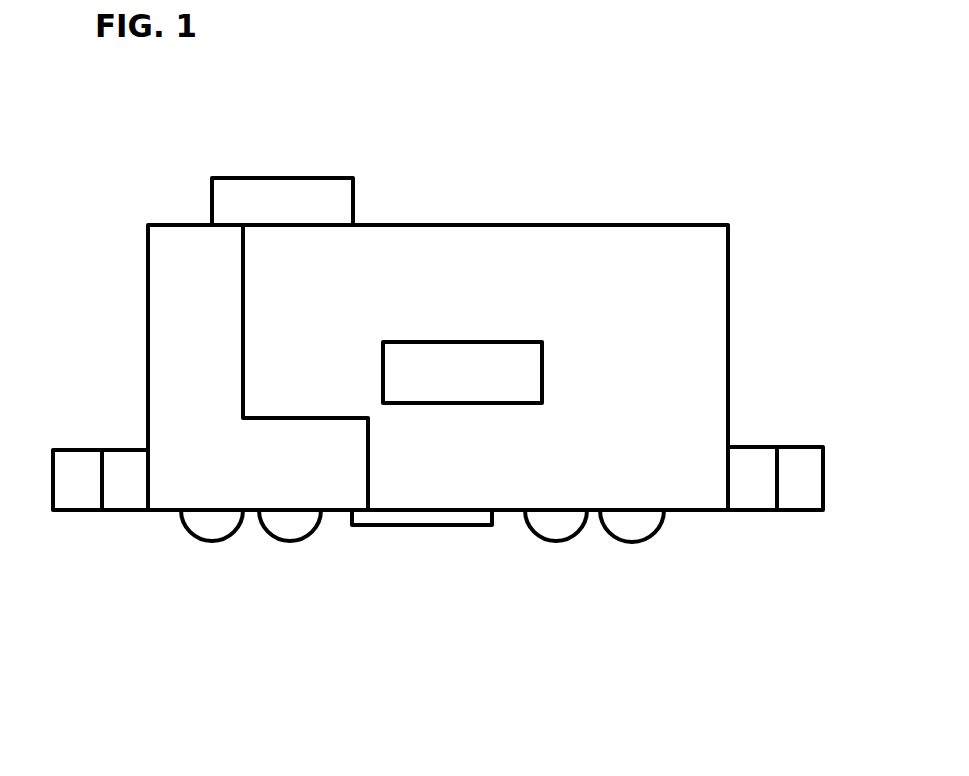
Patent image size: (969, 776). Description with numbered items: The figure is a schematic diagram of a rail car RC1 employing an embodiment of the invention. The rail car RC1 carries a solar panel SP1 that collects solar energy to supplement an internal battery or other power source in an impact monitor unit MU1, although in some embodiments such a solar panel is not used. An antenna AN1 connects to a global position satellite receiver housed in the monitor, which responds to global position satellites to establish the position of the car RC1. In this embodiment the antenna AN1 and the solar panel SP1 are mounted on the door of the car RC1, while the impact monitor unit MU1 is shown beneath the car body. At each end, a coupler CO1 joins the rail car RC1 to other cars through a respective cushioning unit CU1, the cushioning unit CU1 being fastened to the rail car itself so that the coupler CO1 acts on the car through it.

The rail car RC1 is at (665, 268).
The solar panel SP1 is at (228, 210).
The antenna AN1 is at (510, 372).
The coupler CO1 is at (70, 497).
The cushioning unit CU1 is at (118, 495).
The impact monitor unit MU1 is at (478, 527).